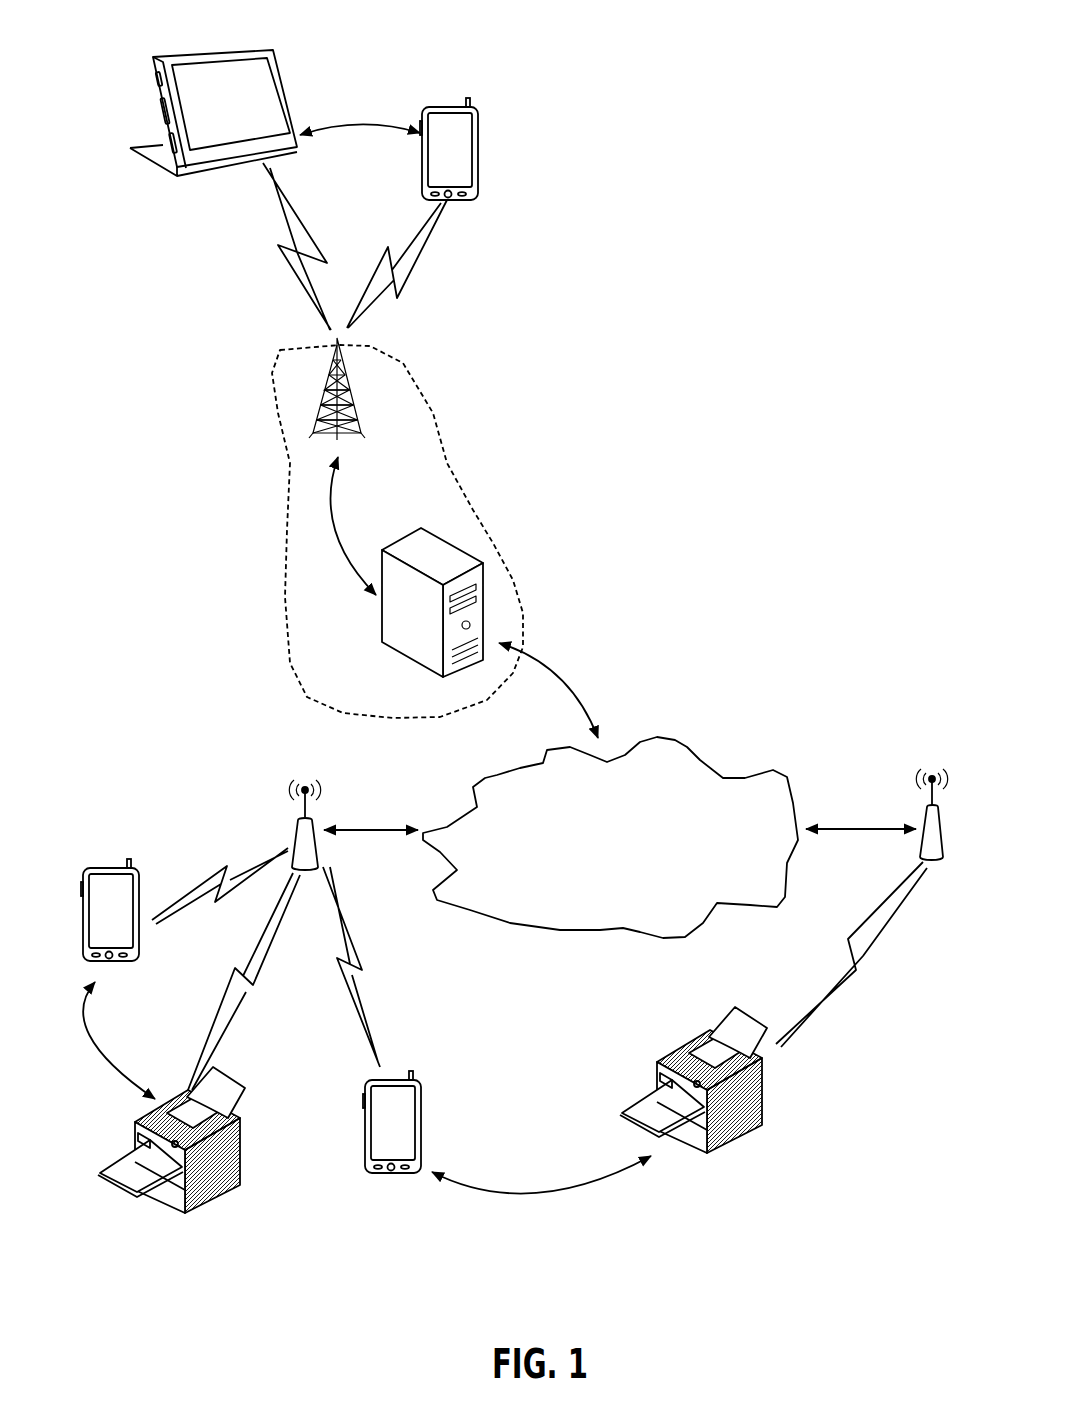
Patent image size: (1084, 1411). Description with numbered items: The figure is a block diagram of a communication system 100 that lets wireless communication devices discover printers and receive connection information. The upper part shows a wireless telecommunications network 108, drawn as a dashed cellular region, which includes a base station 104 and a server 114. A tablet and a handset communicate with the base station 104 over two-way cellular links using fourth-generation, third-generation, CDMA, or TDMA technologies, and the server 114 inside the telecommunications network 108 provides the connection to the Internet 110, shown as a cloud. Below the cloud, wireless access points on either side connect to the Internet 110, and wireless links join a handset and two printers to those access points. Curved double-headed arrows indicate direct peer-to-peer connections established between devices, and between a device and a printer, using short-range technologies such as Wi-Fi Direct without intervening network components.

The communication system 100 is at (629, 97).
The base station 104 is at (343, 403).
The wireless telecommunications network 108 is at (496, 521).
The Internet 110 is at (688, 746).
The server 114 is at (385, 648).